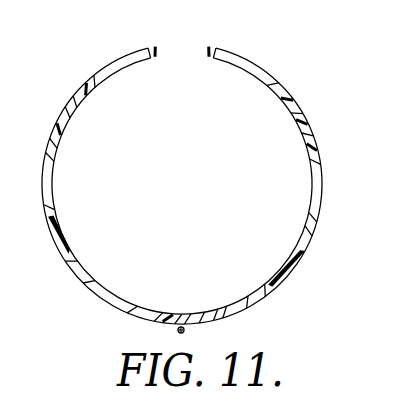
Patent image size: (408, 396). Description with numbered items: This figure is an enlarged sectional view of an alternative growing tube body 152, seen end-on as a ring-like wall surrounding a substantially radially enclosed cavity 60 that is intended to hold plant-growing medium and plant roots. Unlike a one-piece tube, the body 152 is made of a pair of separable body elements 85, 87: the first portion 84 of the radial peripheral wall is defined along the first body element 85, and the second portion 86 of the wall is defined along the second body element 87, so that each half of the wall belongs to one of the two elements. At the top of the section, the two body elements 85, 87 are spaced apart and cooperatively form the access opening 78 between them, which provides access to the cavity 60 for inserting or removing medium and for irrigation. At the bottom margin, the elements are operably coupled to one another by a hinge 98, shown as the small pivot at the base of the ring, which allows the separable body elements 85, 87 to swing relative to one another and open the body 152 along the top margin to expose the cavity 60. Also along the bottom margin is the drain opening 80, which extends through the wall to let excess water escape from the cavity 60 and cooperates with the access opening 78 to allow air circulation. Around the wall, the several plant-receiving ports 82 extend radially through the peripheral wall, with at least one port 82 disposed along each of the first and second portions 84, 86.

The cavity 60 is at (182, 185).
The access opening 78 is at (207, 53).
The drain opening 80 is at (200, 298).
The plant-receiving port 82 is at (249, 68).
The first portion 84 is at (330, 240).
The first body element 85 is at (304, 123).
The second portion 86 is at (52, 260).
The second body element 87 is at (57, 125).
The hinge 98 is at (177, 331).
The body 152 is at (80, 58).